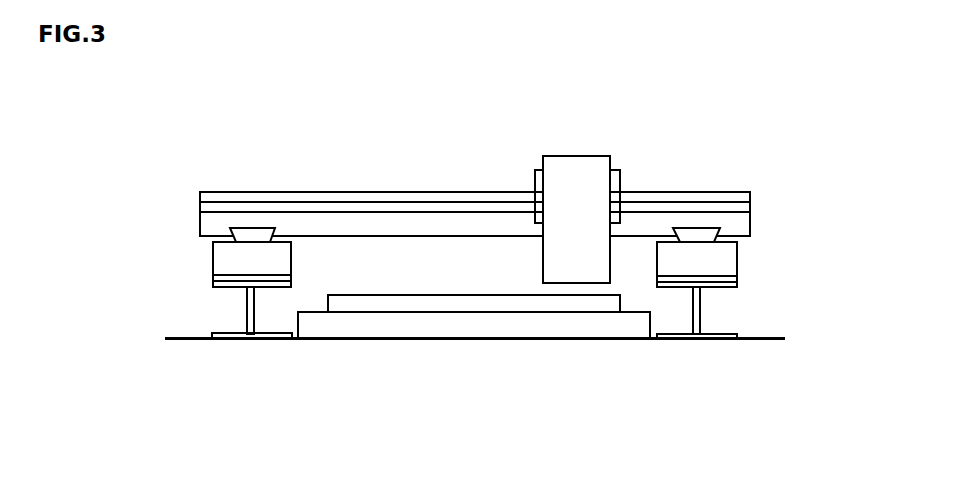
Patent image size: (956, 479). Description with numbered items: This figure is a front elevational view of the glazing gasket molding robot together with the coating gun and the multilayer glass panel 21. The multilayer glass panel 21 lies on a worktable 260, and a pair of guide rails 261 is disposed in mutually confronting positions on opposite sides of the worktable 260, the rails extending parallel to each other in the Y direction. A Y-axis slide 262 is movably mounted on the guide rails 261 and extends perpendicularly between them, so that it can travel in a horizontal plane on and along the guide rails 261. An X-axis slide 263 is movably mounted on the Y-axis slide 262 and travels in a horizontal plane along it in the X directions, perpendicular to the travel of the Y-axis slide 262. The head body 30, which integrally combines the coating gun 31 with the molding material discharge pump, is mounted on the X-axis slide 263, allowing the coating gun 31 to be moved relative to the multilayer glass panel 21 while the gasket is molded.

The multilayer glass panel 21 is at (362, 295).
The head body 30 is at (567, 178).
The coating gun 31 is at (565, 188).
The worktable 260 is at (652, 318).
The guide rails 261 is at (213, 262).
The Y-axis slide 262 is at (240, 192).
The X-axis slide 263 is at (622, 183).